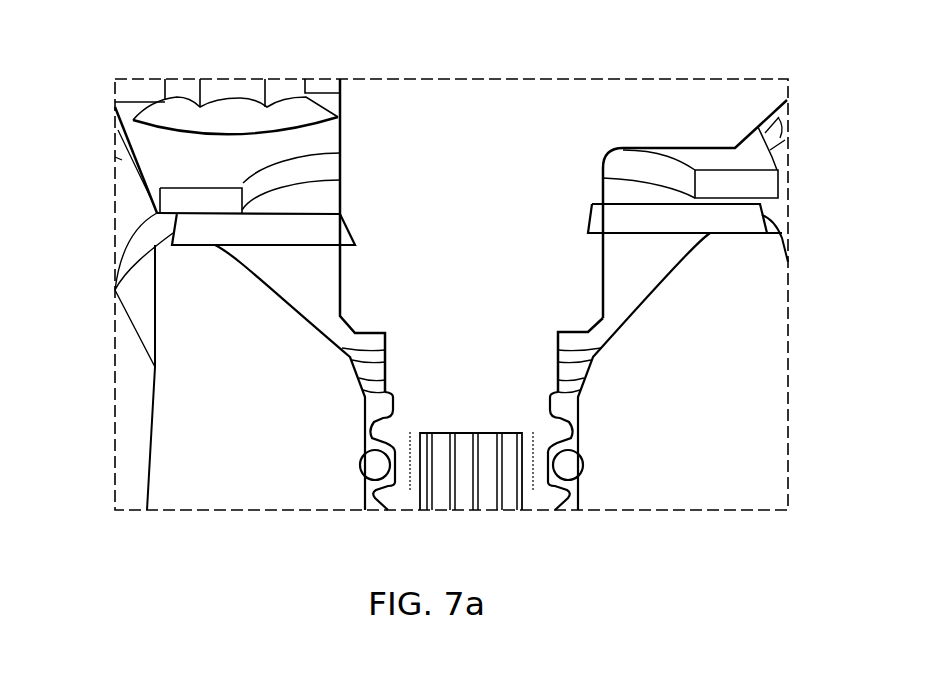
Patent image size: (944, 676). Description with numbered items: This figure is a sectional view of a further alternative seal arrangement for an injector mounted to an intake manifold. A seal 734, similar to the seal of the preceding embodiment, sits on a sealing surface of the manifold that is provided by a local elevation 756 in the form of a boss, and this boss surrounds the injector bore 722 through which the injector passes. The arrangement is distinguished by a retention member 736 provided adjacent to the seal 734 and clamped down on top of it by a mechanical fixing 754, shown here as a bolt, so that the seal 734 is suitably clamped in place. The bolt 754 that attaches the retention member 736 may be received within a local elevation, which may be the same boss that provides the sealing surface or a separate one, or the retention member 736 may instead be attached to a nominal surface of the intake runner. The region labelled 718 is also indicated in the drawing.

The mechanical fixing 754 is at (235, 113).
The central channel 718 is at (503, 122).
The retention member 736 is at (180, 160).
The seal 734 is at (710, 222).
The local elevation 756 is at (750, 252).
The injector bore 722 is at (620, 290).